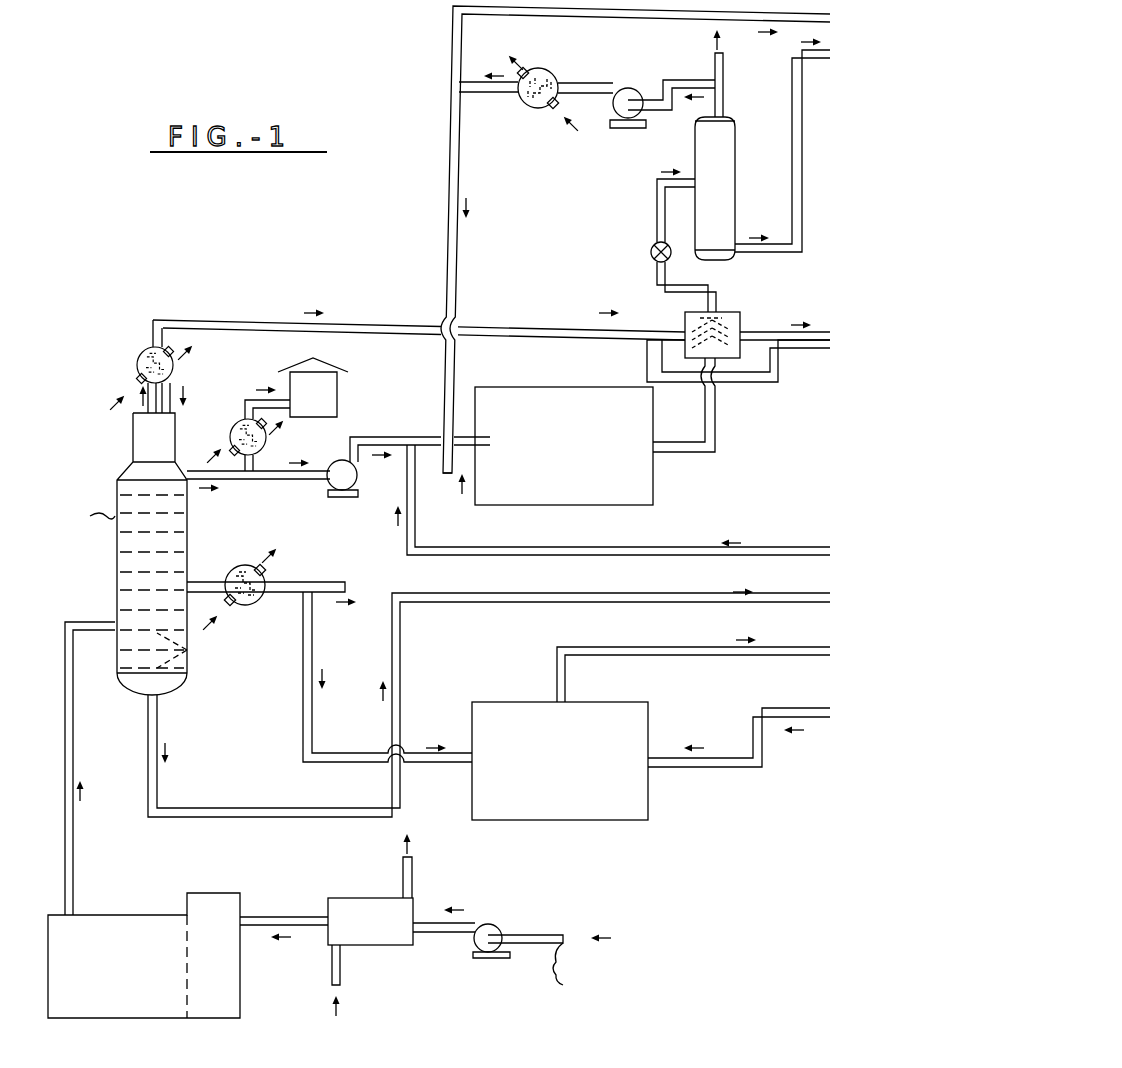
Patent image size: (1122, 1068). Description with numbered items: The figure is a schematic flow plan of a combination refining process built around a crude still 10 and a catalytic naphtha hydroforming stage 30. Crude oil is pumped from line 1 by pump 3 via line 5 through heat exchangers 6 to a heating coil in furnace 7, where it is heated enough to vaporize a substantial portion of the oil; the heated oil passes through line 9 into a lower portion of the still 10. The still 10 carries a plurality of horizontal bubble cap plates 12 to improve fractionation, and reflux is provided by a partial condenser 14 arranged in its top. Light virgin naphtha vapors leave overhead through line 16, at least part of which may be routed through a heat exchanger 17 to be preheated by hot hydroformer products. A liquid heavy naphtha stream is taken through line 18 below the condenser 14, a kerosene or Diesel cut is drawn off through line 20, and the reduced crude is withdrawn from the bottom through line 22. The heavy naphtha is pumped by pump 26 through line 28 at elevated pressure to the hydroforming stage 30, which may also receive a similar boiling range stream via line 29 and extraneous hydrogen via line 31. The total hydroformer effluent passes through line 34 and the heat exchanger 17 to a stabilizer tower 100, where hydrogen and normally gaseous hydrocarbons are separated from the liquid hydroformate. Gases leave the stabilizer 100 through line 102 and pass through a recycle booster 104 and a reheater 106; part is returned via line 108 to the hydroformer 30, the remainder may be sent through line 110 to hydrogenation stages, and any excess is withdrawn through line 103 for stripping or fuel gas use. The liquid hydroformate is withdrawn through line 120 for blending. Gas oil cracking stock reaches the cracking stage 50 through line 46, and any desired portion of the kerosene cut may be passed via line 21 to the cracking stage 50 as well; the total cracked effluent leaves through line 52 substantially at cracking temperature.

The line 1 is at (565, 951).
The pump 3 is at (483, 960).
The line 5 is at (297, 915).
The heat exchangers 6 is at (376, 937).
The furnace 7 is at (181, 1013).
The line 9 is at (63, 797).
The crude still 10 is at (188, 523).
The horizontal bubble cap plates 12 is at (190, 652).
The partial condenser 14 is at (138, 344).
The line 16 is at (192, 318).
The heat exchanger 17 is at (744, 323).
The line 18 is at (300, 483).
The line 20 is at (292, 582).
The line 21 is at (302, 703).
The line 22 is at (250, 808).
The pump 26 is at (337, 505).
The line 28 is at (398, 436).
The line 29 is at (613, 500).
The catalytic naphtha hydroforming stage 30 is at (654, 493).
The line 31 is at (448, 478).
The line 34 is at (652, 221).
The line 46 is at (753, 769).
The cracking stage 50 is at (611, 808).
The line 52 is at (757, 660).
The stabilizer tower 100 is at (700, 163).
The line 102 is at (677, 80).
The line 103 is at (724, 67).
The recycle booster 104 is at (628, 128).
The reheater 106 is at (523, 107).
The line 108 is at (446, 228).
The line 110 is at (450, 31).
The line 120 is at (792, 127).